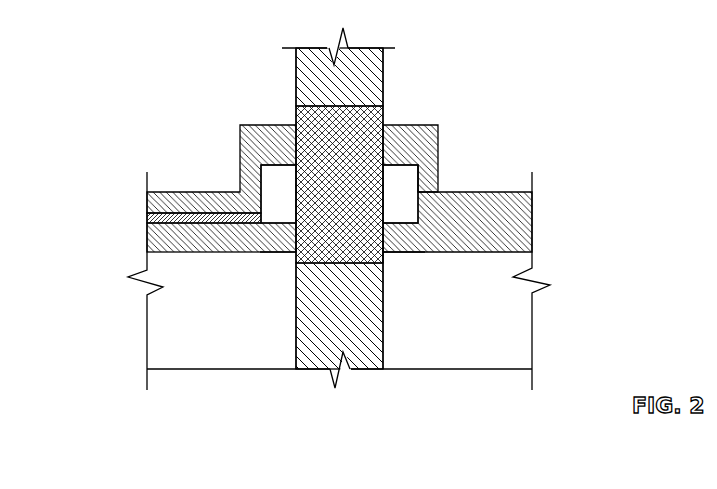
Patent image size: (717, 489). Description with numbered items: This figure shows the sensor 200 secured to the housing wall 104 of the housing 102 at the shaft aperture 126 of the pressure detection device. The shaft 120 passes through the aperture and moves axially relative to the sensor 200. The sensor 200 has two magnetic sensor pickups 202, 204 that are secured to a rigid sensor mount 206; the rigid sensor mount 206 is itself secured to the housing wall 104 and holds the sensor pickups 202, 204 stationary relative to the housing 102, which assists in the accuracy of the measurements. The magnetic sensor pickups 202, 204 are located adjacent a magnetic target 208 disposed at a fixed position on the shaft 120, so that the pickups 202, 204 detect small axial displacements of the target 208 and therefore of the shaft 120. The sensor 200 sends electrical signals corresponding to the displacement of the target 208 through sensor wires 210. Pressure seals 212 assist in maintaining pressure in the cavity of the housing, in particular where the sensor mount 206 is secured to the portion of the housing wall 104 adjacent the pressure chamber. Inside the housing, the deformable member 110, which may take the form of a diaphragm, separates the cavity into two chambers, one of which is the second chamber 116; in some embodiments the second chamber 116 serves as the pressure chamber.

The sensor 200 is at (510, 53).
The deformable member 110 is at (61, 6).
The shaft 120 is at (358, 63).
The magnetic target 208 is at (326, 132).
The magnetic sensor pickup 204 is at (268, 177).
The rigid sensor mount 206 is at (418, 126).
The magnetic sensor pickup 202 is at (403, 180).
The sensor wires 210 is at (158, 218).
The housing 102 is at (160, 242).
The housing wall 104 is at (508, 241).
The second chamber 116 is at (207, 291).
The pressure seals 212 is at (282, 245).
The shaft aperture 126 is at (382, 247).